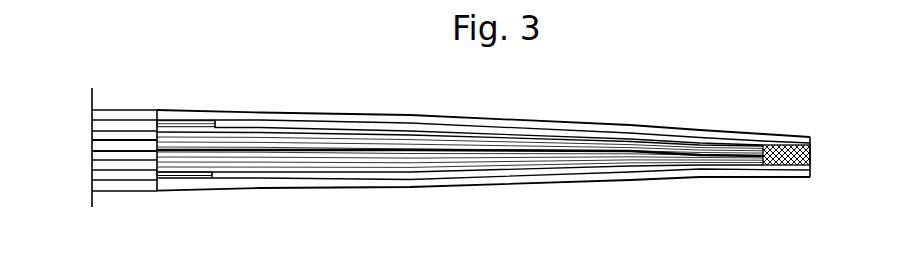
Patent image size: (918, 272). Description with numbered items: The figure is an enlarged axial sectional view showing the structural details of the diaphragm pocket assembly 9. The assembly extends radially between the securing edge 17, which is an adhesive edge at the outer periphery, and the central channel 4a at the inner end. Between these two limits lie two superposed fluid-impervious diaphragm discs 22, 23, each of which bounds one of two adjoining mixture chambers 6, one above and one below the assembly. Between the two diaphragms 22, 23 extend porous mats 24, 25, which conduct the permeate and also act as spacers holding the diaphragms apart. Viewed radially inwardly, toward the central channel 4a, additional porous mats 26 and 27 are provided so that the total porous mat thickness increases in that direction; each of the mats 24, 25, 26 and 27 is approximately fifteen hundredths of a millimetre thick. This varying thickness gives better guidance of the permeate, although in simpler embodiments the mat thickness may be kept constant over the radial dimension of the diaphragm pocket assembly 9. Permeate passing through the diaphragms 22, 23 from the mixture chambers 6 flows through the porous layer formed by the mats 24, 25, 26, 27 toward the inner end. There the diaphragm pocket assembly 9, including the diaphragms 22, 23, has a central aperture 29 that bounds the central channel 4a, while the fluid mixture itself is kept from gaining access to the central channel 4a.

The central channel 4a is at (100, 135).
The mixture chamber 6 is at (408, 86).
The diaphragm pocket assembly 9 is at (511, 145).
The securing edge 17 is at (810, 162).
The diaphragm disc 22 is at (660, 133).
The diaphragm disc 23 is at (660, 175).
The porous mat 24 is at (615, 157).
The porous mat 25 is at (610, 148).
The additional porous mat 26 is at (262, 168).
The additional porous mat 27 is at (207, 173).
The central aperture 29 is at (120, 135).